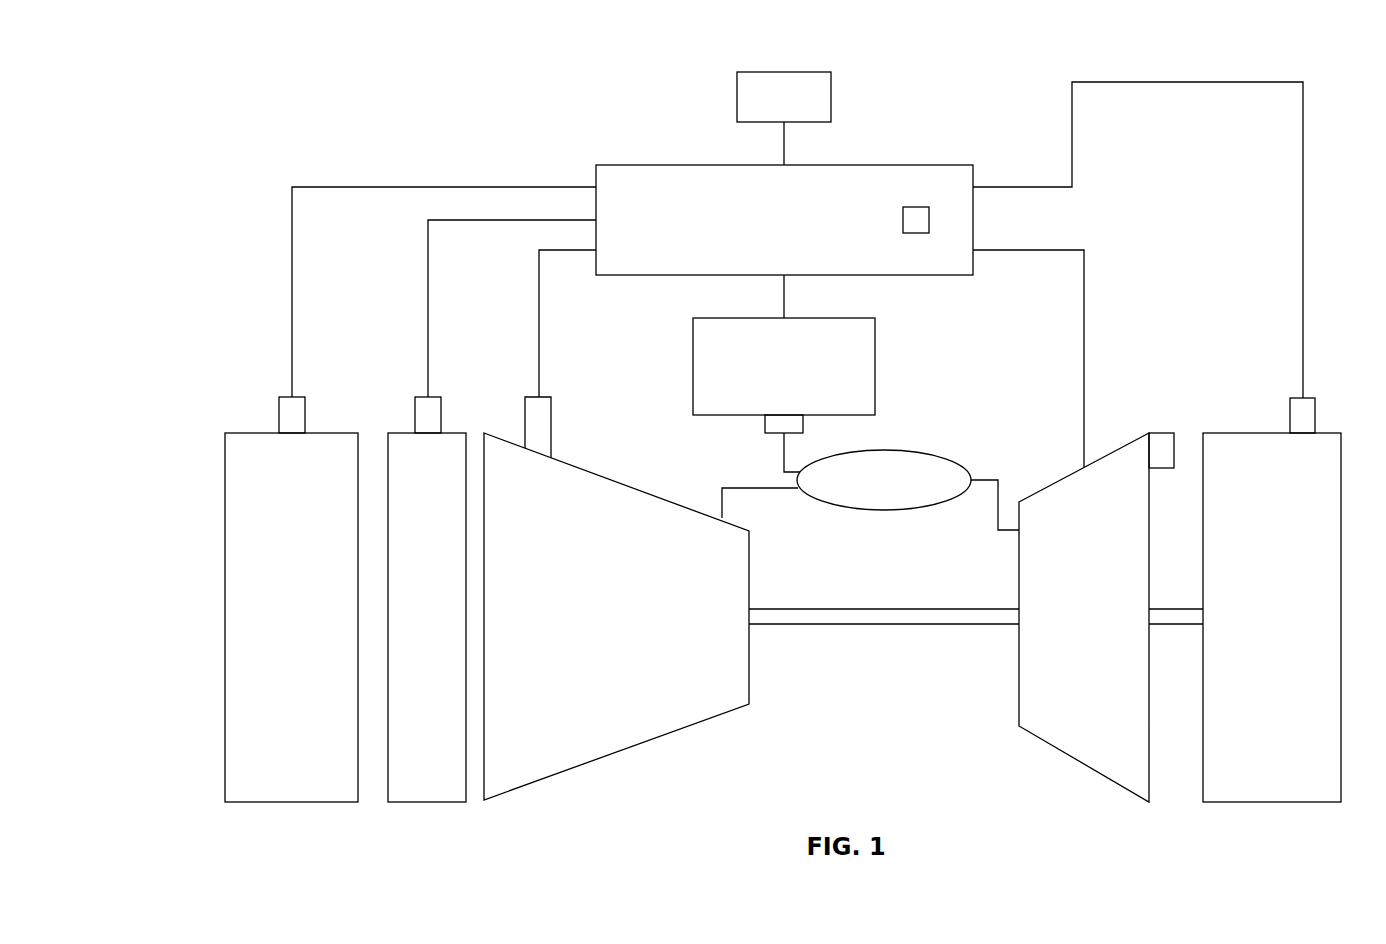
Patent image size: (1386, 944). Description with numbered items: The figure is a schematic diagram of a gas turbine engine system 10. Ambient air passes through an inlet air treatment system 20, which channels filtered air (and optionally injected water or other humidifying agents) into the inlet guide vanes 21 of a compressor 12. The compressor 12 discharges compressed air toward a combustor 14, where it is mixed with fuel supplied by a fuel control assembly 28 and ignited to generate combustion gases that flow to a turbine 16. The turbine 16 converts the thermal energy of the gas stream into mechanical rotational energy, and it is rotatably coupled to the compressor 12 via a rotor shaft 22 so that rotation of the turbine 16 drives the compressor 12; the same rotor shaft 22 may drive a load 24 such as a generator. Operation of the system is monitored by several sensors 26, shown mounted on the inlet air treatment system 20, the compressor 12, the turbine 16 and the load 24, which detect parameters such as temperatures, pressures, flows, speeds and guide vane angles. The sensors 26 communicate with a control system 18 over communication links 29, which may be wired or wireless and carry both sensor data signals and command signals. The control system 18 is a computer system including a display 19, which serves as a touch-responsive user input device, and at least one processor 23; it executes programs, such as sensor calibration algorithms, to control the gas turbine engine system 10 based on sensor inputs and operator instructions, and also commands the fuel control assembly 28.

The gas turbine engine system 10 is at (338, 156).
The compressor 12 is at (680, 731).
The combustor 14 is at (884, 509).
The turbine 16 is at (1060, 480).
The control system 18 is at (645, 165).
The display 19 is at (784, 72).
The inlet air treatment system 20 is at (258, 433).
The inlet guide vanes 21 is at (398, 433).
The rotor shaft 22 is at (933, 609).
The processor 23 is at (913, 207).
The load 24 is at (1250, 433).
The sensors 26 is at (283, 397).
The fuel control assembly 28 is at (741, 318).
The communication links 29 is at (538, 186).